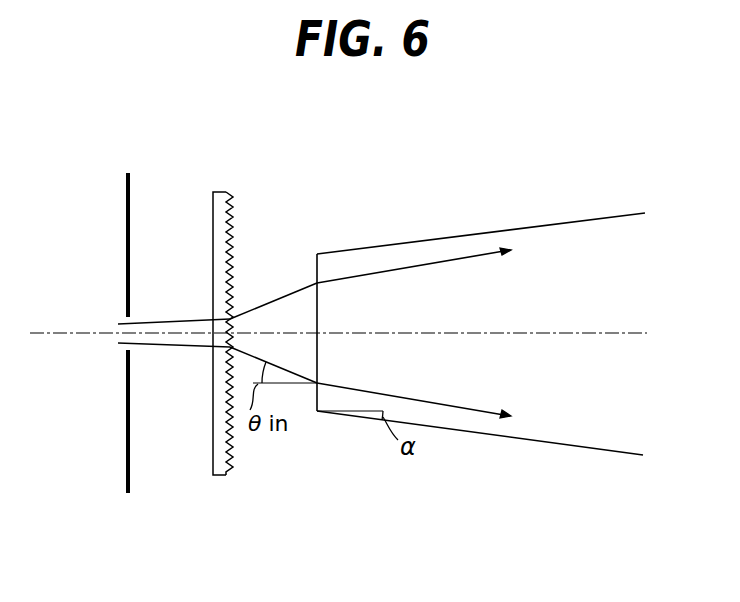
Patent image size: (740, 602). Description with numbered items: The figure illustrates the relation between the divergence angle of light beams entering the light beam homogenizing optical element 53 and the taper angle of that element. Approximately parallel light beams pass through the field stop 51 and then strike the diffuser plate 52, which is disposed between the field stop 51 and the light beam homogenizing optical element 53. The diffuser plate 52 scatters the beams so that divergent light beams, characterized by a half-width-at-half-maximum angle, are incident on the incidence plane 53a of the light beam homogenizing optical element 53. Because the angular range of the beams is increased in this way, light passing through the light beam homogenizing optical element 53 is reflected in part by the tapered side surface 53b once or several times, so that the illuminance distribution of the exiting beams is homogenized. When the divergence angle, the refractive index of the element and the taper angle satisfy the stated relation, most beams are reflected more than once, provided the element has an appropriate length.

The field stop 51 is at (127, 226).
The diffuser plate 52 is at (221, 192).
The light beam homogenizing optical element 53 is at (451, 304).
The incidence plane 53a is at (317, 272).
The side surface 53b is at (447, 237).